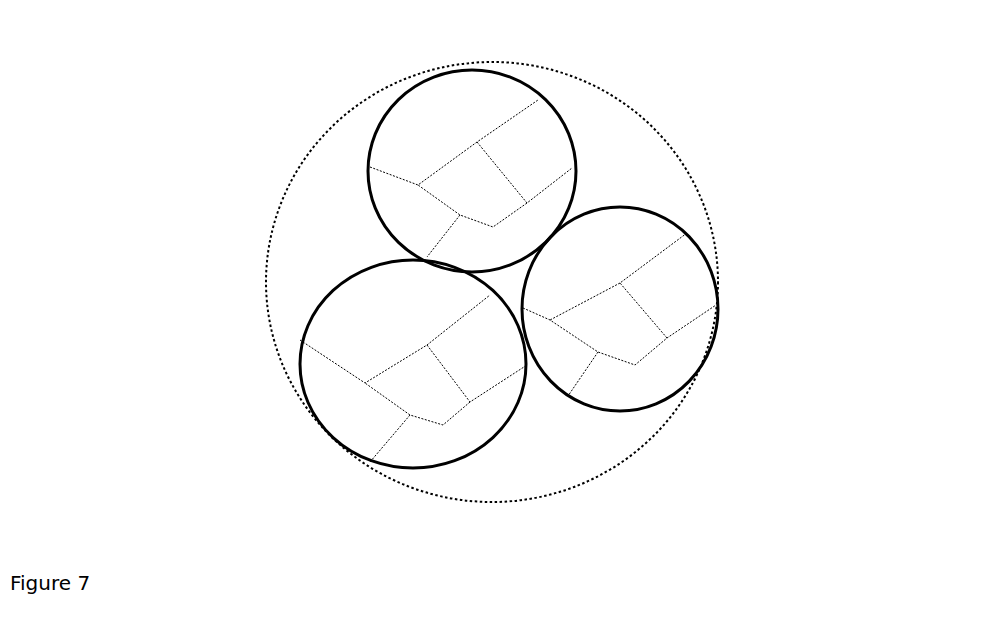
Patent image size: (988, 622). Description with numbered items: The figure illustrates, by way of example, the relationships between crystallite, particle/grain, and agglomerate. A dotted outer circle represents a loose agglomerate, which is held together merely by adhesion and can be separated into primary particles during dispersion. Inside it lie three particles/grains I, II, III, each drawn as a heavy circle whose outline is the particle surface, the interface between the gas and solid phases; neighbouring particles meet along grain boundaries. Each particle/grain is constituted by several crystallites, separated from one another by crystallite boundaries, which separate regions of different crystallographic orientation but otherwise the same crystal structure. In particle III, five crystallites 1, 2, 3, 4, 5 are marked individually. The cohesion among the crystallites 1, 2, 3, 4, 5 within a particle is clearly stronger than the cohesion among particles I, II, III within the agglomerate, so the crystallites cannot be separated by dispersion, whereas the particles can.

The crystallite 1 is at (772, 245).
The crystallite 2 is at (772, 245).
The crystallite 3 is at (772, 245).
The crystallite 4 is at (772, 245).
The crystallite 5 is at (772, 245).
The particle I is at (472, 171).
The particle II is at (413, 364).
The particle III is at (620, 309).